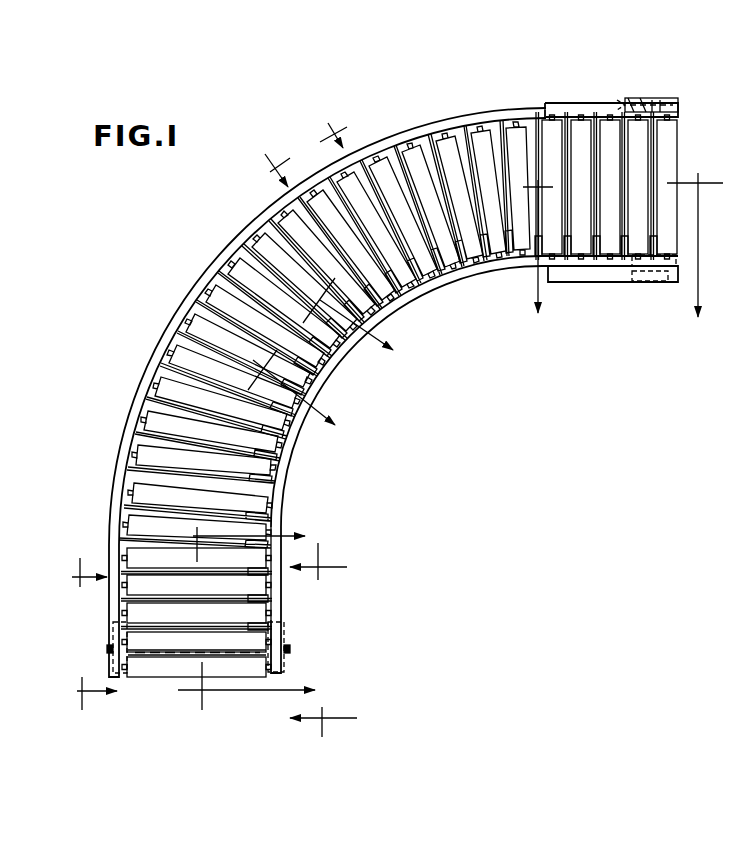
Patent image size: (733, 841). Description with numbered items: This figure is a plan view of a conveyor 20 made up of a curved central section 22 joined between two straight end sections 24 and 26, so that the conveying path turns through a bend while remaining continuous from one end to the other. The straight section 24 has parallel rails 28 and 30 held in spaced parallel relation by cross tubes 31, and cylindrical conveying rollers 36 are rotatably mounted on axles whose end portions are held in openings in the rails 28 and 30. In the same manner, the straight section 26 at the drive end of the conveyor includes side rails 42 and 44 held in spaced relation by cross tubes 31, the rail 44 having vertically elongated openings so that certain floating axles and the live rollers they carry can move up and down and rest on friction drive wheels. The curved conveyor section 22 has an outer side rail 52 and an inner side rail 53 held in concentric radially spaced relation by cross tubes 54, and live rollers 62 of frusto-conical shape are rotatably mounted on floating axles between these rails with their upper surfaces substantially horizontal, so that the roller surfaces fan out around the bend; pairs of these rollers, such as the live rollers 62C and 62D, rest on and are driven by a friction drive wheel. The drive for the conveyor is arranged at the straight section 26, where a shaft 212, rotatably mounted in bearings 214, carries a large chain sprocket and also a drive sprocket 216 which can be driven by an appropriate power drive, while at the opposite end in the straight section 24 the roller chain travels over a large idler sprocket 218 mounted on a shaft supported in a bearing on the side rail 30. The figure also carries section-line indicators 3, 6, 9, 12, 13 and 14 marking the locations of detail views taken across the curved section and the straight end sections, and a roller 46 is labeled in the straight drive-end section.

The conveyor 20 is at (533, 78).
The curved central section 22 is at (476, 104).
The straight end section 24 is at (287, 607).
The straight end section 26 is at (629, 97).
The rail 28 is at (113, 627).
The rail 30 is at (277, 592).
The cross tubes 31 is at (130, 590).
The cylindrical conveying rollers 36 is at (220, 624).
The side rail 42 is at (673, 103).
The side rail 44 is at (677, 254).
The straight section roller 46 is at (652, 145).
The outer side rail 52 is at (235, 245).
The inner side rail 53 is at (332, 368).
The cross tubes 54 is at (497, 262).
The live rollers 62 is at (180, 398).
The live roller 62C is at (217, 295).
The live roller 62D is at (223, 278).
The shaft 212 is at (652, 100).
The bearings 214 is at (617, 100).
The drive sprocket 216 is at (630, 284).
The large idler sprocket 218 is at (290, 634).
The section line 3- 3 is at (329, 362).
The section line 6- 6 is at (248, 612).
The section line 9- 9 is at (623, 263).
The section line 12- 12 is at (94, 634).
The section line 13- 13 is at (338, 640).
The section line 14- 14 is at (298, 144).